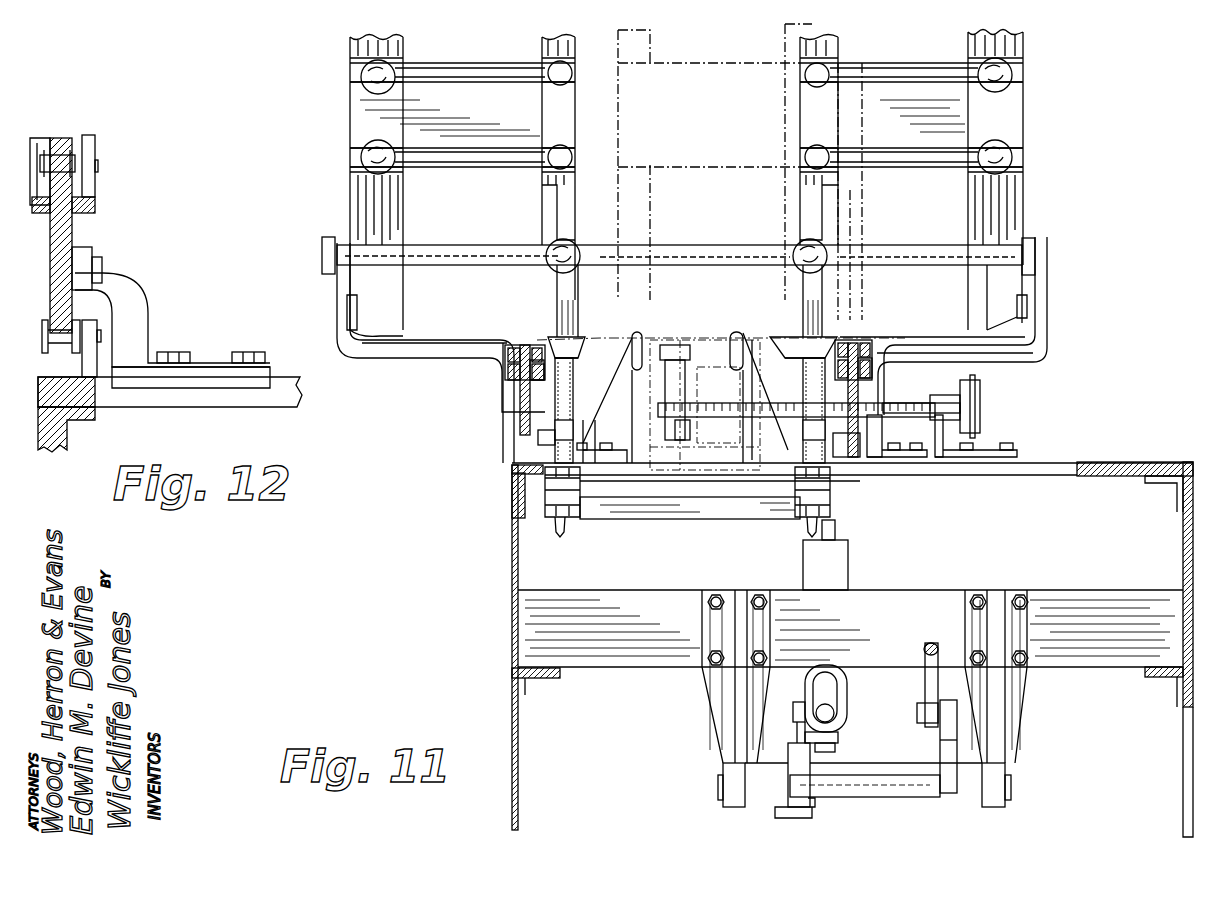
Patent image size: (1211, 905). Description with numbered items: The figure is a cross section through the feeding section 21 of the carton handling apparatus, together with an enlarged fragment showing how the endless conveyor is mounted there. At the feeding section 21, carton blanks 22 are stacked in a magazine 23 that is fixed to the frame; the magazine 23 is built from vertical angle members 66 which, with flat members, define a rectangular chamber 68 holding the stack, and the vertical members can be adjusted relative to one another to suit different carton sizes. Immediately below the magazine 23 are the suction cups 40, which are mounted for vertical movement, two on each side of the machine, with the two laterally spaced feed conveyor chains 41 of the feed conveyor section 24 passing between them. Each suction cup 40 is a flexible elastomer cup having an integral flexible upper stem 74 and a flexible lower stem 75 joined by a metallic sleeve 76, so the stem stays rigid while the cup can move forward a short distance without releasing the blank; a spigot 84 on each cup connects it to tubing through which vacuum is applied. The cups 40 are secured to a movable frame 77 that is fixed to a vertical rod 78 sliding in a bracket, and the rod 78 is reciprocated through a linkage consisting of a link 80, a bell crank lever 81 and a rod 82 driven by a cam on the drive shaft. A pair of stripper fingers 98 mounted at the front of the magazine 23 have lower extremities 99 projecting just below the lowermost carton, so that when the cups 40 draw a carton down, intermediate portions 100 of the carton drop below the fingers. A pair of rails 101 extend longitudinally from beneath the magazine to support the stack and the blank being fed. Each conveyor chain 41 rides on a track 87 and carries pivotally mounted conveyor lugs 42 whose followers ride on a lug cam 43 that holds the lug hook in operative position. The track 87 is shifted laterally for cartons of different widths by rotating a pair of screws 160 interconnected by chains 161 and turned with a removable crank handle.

In FIG. 11, the feeding section 21 is at (467, 446).
In FIG. 11, the carton blanks 22 is at (695, 333).
In FIG. 11, the magazine 23 is at (1046, 127).
In FIG. 11, the feed conveyor section 24 is at (486, 405).
In FIG. 11, the suction cups 40 is at (578, 390).
In FIG. 12, the feed conveyor chains 41 is at (64, 160).
In FIG. 11, the feed conveyor chains 41 is at (530, 345).
In FIG. 12, the conveyor lug 42 is at (102, 141).
In FIG. 11, the conveyor lug 42 is at (541, 345).
In FIG. 12, the lug cam 43 is at (98, 205).
In FIG. 11, the lug cam 43 is at (532, 380).
In FIG. 11, the vertical angle members 66 is at (348, 188).
In FIG. 11, the rectangular chamber 68 is at (740, 172).
In FIG. 11, the upper stem 74 is at (576, 345).
In FIG. 11, the lower stem 75 is at (590, 445).
In FIG. 11, the metallic sleeve 76 is at (570, 428).
In FIG. 11, the movable frame 77 is at (700, 521).
In FIG. 11, the vertical rod 78 is at (838, 528).
In FIG. 11, the link 80 is at (812, 762).
In FIG. 11, the bell crank lever 81 is at (800, 812).
In FIG. 11, the rod 82 is at (937, 648).
In FIG. 11, the spigot 84 is at (566, 522).
In FIG. 12, the track 87 is at (68, 236).
In FIG. 11, the track 87 is at (525, 425).
In FIG. 11, the stripper fingers 98 is at (570, 300).
In FIG. 11, the lower extremities 99 is at (573, 322).
In FIG. 11, the intermediate portions 100 is at (721, 347).
In FIG. 11, the rails 101 is at (640, 334).
In FIG. 11, the screws 160 is at (730, 418).
In FIG. 11, the chains 161 is at (980, 385).